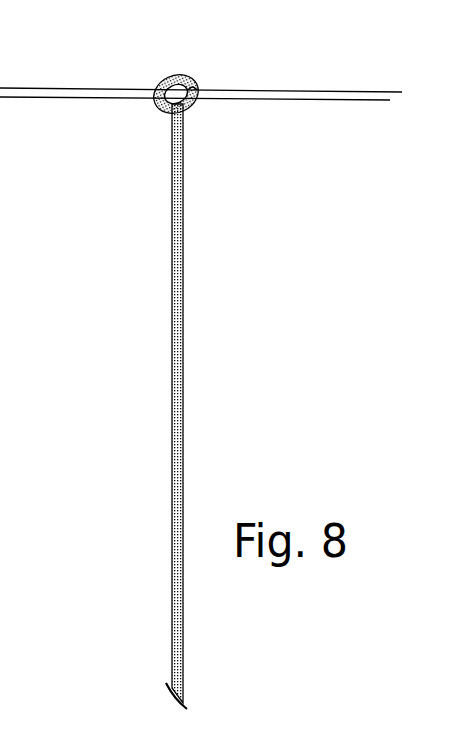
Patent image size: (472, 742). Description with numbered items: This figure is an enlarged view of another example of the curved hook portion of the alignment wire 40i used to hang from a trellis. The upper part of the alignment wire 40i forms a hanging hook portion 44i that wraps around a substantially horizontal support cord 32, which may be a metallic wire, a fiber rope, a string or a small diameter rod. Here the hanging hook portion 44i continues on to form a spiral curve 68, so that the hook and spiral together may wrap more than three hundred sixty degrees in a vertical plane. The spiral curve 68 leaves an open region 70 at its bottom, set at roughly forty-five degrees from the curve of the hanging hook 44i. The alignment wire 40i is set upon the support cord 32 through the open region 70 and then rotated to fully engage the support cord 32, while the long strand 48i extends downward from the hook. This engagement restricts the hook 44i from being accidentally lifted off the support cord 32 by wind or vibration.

The support cord 32 is at (93, 91).
The hanging hook portion 44i is at (162, 114).
The spiral curve 68 is at (180, 82).
The open region 70 is at (153, 96).
The alignment wire 40i is at (189, 370).
The strand 48i is at (183, 302).